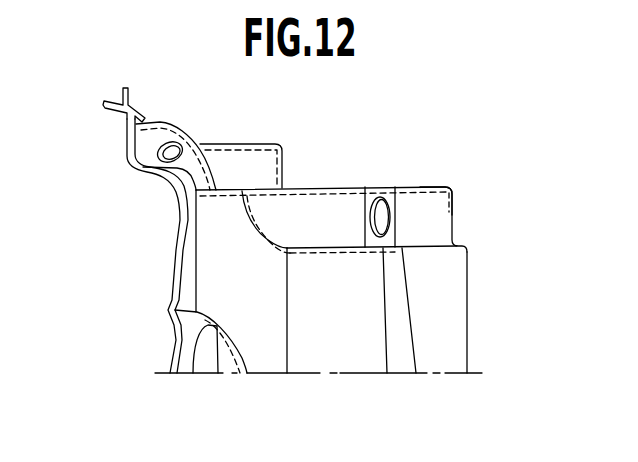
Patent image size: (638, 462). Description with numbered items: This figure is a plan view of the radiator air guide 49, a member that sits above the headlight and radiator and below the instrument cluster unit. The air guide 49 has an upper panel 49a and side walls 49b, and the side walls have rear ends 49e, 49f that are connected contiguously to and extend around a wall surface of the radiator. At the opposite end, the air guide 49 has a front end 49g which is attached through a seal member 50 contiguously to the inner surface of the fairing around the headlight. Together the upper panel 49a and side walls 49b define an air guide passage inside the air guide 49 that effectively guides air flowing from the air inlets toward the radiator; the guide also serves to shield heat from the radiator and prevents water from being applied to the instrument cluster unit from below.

The radiator air guide 49 is at (418, 178).
The upper panel 49a is at (373, 363).
The side wall 49b is at (323, 190).
The rear end 49e is at (458, 316).
The rear end 49f is at (438, 184).
The front end 49g is at (122, 118).
The seal member 50 is at (133, 104).